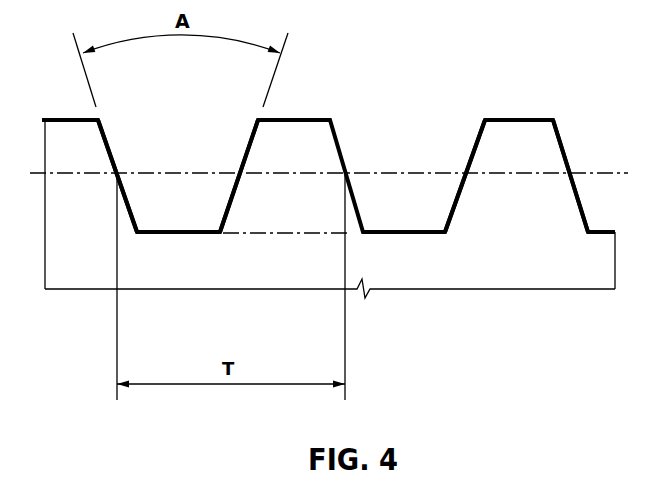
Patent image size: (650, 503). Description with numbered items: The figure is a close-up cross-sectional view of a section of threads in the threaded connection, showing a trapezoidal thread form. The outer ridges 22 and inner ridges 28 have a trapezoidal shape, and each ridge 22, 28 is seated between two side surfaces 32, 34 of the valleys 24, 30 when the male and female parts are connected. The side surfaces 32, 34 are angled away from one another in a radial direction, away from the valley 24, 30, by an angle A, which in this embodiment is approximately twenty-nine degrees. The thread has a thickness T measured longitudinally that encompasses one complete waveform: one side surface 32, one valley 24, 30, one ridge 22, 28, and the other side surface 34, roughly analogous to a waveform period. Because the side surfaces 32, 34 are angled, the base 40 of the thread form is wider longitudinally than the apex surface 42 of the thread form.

The outer apex or ridge 22 is at (328, 153).
The inner apex or ridge 28 is at (517, 118).
The outer recessed portion or valley 24 is at (410, 278).
The inner recessed portion or valley 30 is at (410, 233).
The side surface 32 is at (112, 153).
The side surface 34 is at (243, 163).
The base of the thread form 40 is at (266, 233).
The apex surface of the thread form 42 is at (297, 117).